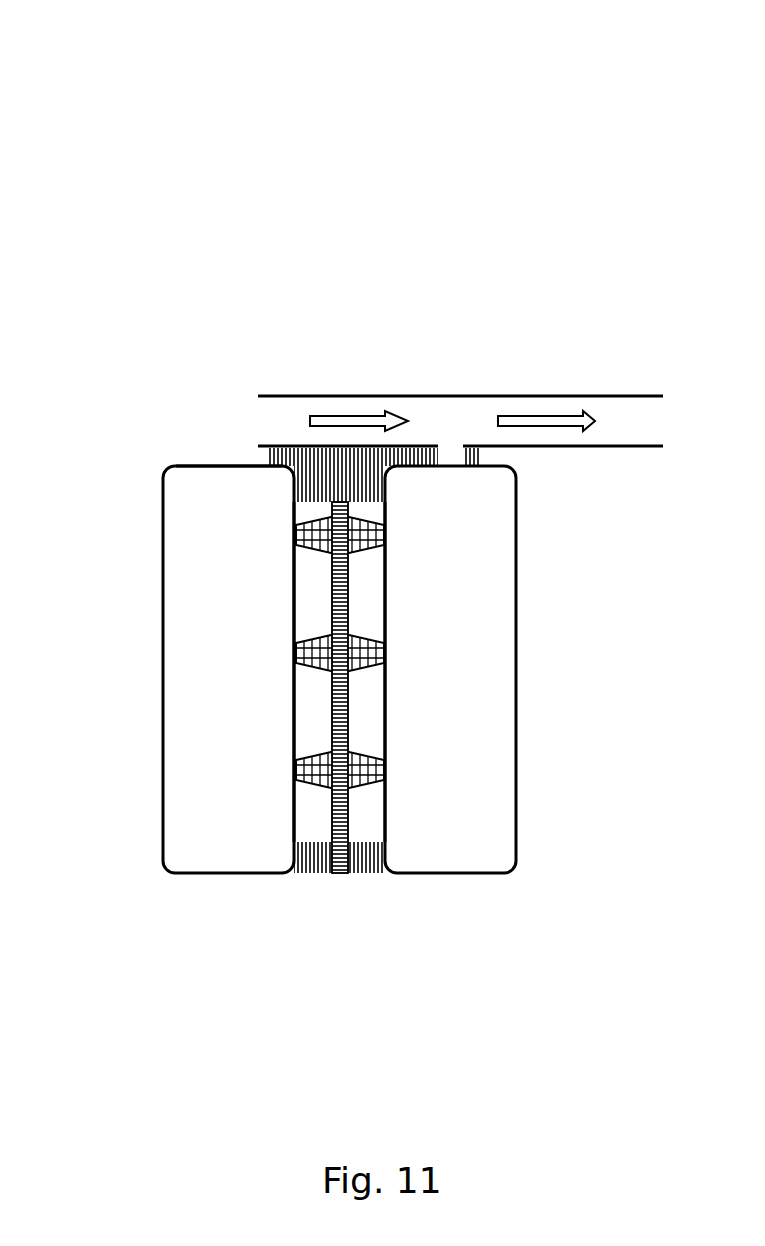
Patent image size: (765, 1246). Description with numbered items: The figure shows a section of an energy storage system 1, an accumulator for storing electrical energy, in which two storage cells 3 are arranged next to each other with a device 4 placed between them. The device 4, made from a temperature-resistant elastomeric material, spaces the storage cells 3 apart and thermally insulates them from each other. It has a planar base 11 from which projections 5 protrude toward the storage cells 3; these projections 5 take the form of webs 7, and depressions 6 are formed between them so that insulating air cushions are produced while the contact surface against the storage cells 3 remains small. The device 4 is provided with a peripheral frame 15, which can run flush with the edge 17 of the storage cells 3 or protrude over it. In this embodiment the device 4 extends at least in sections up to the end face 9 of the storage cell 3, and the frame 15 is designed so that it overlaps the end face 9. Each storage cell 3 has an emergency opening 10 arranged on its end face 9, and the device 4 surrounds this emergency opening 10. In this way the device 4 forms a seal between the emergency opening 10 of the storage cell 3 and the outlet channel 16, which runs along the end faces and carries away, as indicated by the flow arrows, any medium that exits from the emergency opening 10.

The energy storage system 1 is at (400, 240).
The storage cell 3 is at (513, 708).
The device 4 is at (342, 727).
The projection 5 is at (370, 768).
The depression 6 is at (370, 592).
The web 7 is at (308, 767).
The end face 9 is at (197, 465).
The emergency opening 10 is at (450, 452).
The base 11 is at (328, 687).
The frame 15 is at (338, 447).
The outlet channel 16 is at (530, 400).
The edge 17 is at (228, 464).